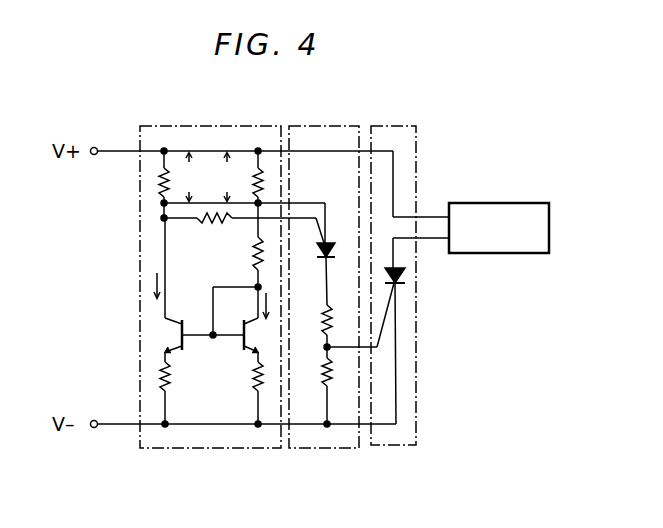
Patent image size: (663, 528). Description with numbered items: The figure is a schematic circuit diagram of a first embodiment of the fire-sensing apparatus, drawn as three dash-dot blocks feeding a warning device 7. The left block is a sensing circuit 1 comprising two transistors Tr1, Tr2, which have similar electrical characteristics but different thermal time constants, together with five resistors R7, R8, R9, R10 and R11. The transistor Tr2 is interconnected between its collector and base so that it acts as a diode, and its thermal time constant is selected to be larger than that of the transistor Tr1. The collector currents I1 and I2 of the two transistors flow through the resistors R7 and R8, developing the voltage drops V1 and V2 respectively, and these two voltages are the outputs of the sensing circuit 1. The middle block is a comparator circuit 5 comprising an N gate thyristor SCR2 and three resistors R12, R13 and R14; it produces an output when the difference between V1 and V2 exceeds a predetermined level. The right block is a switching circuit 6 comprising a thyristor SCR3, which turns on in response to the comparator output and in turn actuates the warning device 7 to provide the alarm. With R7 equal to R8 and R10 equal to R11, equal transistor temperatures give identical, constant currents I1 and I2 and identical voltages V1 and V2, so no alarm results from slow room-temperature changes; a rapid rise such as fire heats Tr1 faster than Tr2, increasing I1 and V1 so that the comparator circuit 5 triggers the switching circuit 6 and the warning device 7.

The sensing circuit 1 is at (218, 448).
The comparator circuit 5 is at (302, 448).
The switching circuit 6 is at (378, 445).
The warning device 7 is at (505, 253).
The resistor R7 is at (157, 180).
The resistor R8 is at (256, 172).
The resistor R9 is at (255, 241).
The resistor R10 is at (172, 367).
The resistor R11 is at (254, 371).
The resistor R12 is at (219, 224).
The resistor R13 is at (322, 306).
The resistor R14 is at (321, 362).
The transistor Tr1 is at (171, 321).
The transistor Tr2 is at (248, 346).
The N gate thyristor SCR2 is at (330, 243).
The thyristor SCR3 is at (404, 274).
The voltage drop V1 is at (191, 177).
The voltage drop V2 is at (228, 177).
The collector current I1 is at (150, 274).
The collector current I2 is at (273, 300).